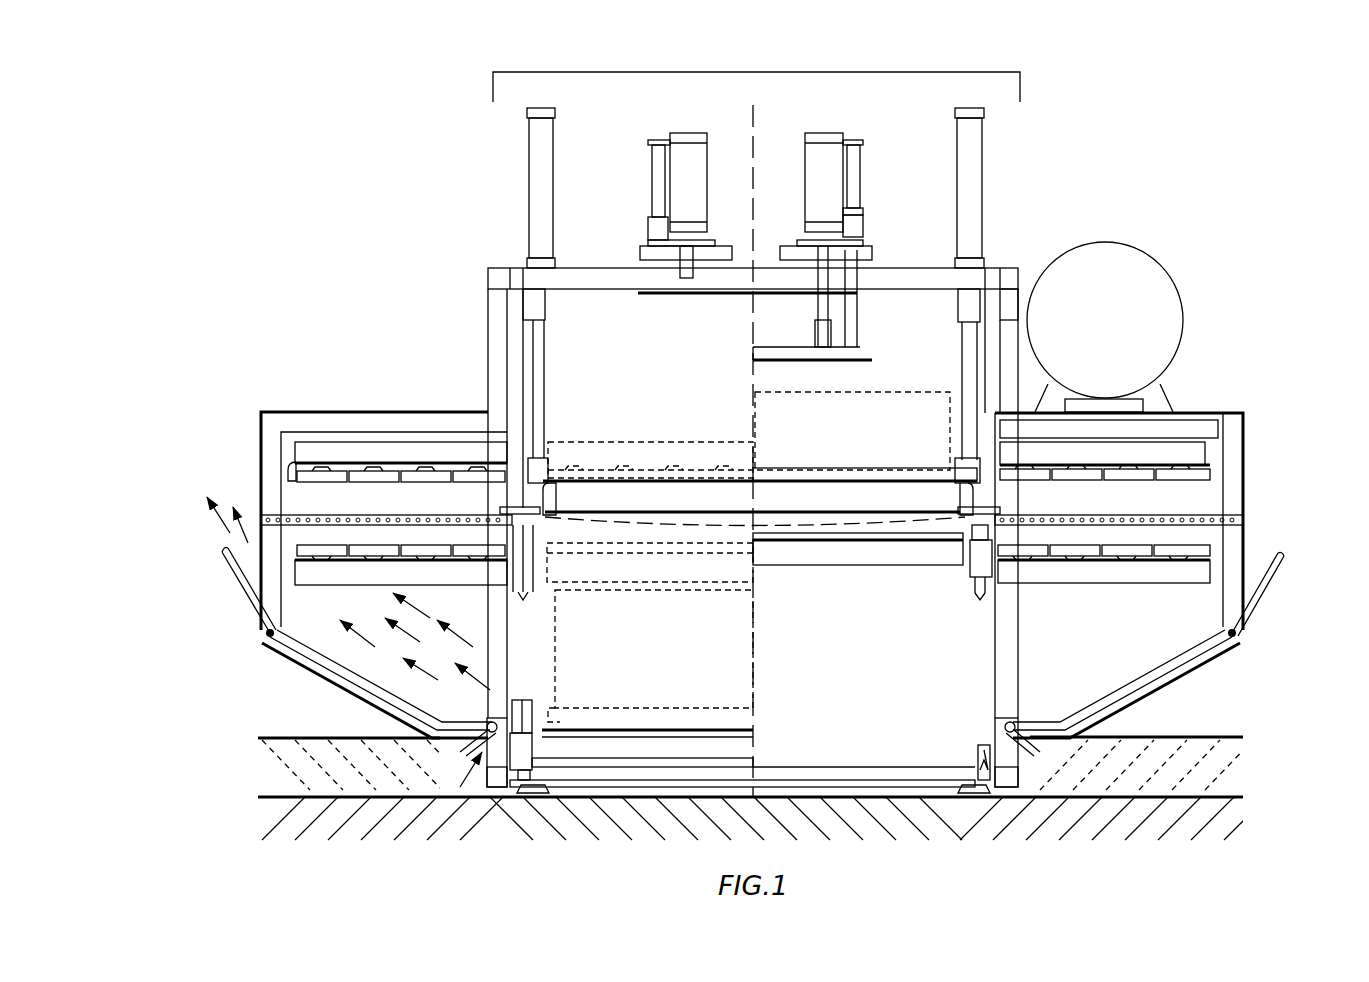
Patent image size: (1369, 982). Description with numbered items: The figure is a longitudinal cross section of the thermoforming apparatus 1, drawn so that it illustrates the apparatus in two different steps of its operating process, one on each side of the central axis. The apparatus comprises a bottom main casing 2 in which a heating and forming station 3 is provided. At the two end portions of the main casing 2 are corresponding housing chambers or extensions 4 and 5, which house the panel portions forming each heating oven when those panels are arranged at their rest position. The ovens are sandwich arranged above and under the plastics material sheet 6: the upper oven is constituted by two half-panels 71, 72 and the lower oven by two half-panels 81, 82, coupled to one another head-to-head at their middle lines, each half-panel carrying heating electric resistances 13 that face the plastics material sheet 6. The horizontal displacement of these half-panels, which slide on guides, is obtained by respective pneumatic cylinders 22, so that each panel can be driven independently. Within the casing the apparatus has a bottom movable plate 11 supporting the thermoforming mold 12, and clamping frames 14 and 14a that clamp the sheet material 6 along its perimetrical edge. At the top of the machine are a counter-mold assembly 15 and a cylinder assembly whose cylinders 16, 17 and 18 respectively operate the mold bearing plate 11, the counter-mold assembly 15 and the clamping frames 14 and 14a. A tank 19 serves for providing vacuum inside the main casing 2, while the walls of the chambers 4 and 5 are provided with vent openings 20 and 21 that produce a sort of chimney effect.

The thermoforming apparatus 1 is at (757, 72).
The bottom main casing 2 is at (897, 648).
The heating and forming station 3 is at (752, 638).
The housing chamber 4 is at (1180, 500).
The housing chamber 5 is at (295, 423).
The plastics material sheet 6 is at (577, 515).
The bottom movable plate 11 is at (717, 743).
The thermoforming mold 12 is at (717, 718).
The heating electric resistances 13 is at (728, 475).
The clamping frame 14 is at (577, 502).
The clamping frame 14a is at (580, 517).
The counter-mold assembly 15 is at (847, 355).
The cylinder 16 is at (977, 353).
The cylinder 17 is at (820, 173).
The cylinder 18 is at (970, 188).
The tank 19 is at (1125, 330).
The vent opening 20 is at (463, 750).
The vent opening 21 is at (225, 565).
The pneumatic cylinder 22 is at (1197, 427).
The half-panel 71 is at (357, 452).
The half-panel 72 is at (1194, 453).
The half-panel 81 is at (310, 575).
The half-panel 82 is at (1168, 572).